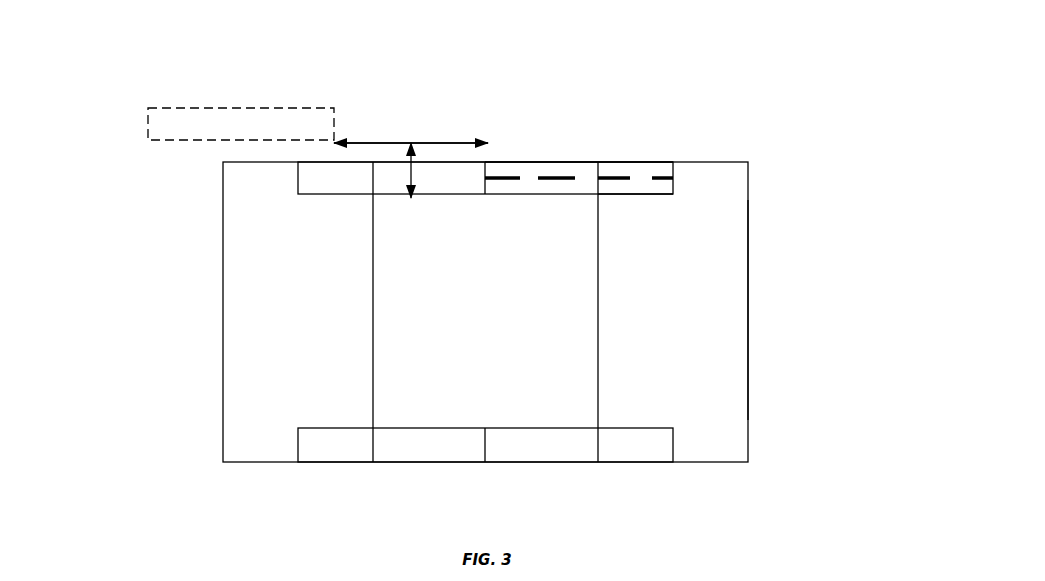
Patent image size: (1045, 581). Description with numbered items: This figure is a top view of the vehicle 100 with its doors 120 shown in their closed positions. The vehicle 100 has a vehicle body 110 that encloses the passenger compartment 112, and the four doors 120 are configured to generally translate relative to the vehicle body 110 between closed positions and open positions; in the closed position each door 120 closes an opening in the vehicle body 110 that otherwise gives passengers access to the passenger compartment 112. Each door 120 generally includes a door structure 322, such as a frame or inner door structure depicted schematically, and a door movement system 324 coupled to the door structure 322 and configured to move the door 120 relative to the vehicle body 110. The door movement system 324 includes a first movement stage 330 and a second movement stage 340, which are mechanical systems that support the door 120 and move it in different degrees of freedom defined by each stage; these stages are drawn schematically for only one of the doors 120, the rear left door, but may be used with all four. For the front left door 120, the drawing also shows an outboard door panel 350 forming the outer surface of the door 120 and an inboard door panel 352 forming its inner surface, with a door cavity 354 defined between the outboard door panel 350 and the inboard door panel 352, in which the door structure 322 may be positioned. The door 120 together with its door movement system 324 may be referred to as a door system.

The vehicle 100 is at (750, 88).
The vehicle body 110 is at (748, 308).
The passenger compartment 112 is at (716, 252).
The door 120 is at (148, 129).
The door structure 322 is at (568, 177).
The door movement system 324 is at (388, 105).
The first movement stage 330 is at (420, 175).
The second movement stage 340 is at (472, 146).
The outboard door panel 350 is at (525, 161).
The inboard door panel 352 is at (617, 193).
The door cavity 354 is at (641, 165).